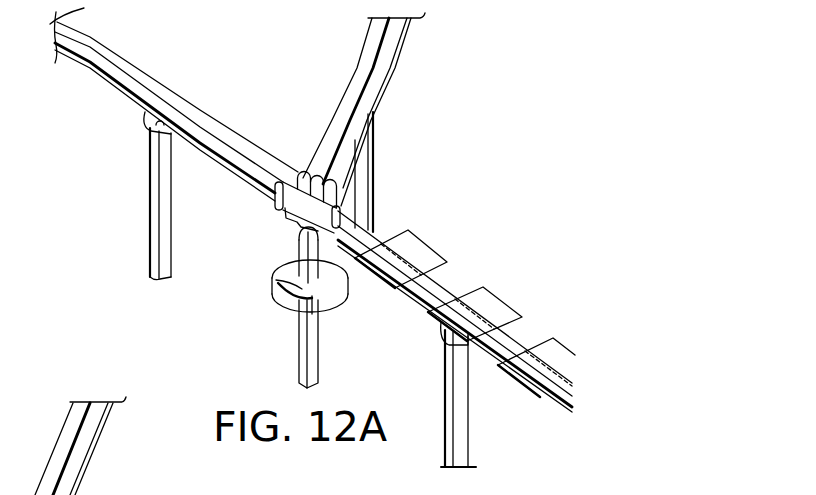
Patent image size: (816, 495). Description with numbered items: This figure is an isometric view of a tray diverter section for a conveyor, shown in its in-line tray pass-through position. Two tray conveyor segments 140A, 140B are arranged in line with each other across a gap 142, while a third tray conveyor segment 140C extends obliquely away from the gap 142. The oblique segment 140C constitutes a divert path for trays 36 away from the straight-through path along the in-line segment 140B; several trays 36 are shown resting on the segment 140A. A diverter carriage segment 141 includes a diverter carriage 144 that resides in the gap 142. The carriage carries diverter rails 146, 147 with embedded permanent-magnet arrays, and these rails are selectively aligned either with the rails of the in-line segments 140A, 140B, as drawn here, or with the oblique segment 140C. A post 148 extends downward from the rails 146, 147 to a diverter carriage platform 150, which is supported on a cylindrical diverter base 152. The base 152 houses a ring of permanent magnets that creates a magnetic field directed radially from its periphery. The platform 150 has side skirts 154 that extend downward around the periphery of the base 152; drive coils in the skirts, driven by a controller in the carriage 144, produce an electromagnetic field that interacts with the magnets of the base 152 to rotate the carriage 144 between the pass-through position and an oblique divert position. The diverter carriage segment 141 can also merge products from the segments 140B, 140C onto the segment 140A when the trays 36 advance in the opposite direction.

The tray 36 is at (432, 251).
The tray conveyor segment 140A is at (548, 402).
The tray conveyor segment 140B is at (127, 91).
The tray conveyor segment 140C is at (384, 86).
The diverter carriage segment 141 is at (244, 304).
The gap 142 is at (274, 212).
The diverter carriage 144 is at (301, 177).
The diverter rail 146 is at (280, 215).
The diverter rail 147 is at (341, 204).
The post 148 is at (355, 280).
The diverter carriage platform 150 is at (281, 270).
The diverter base 152 is at (290, 318).
The side skirt 154 is at (331, 318).